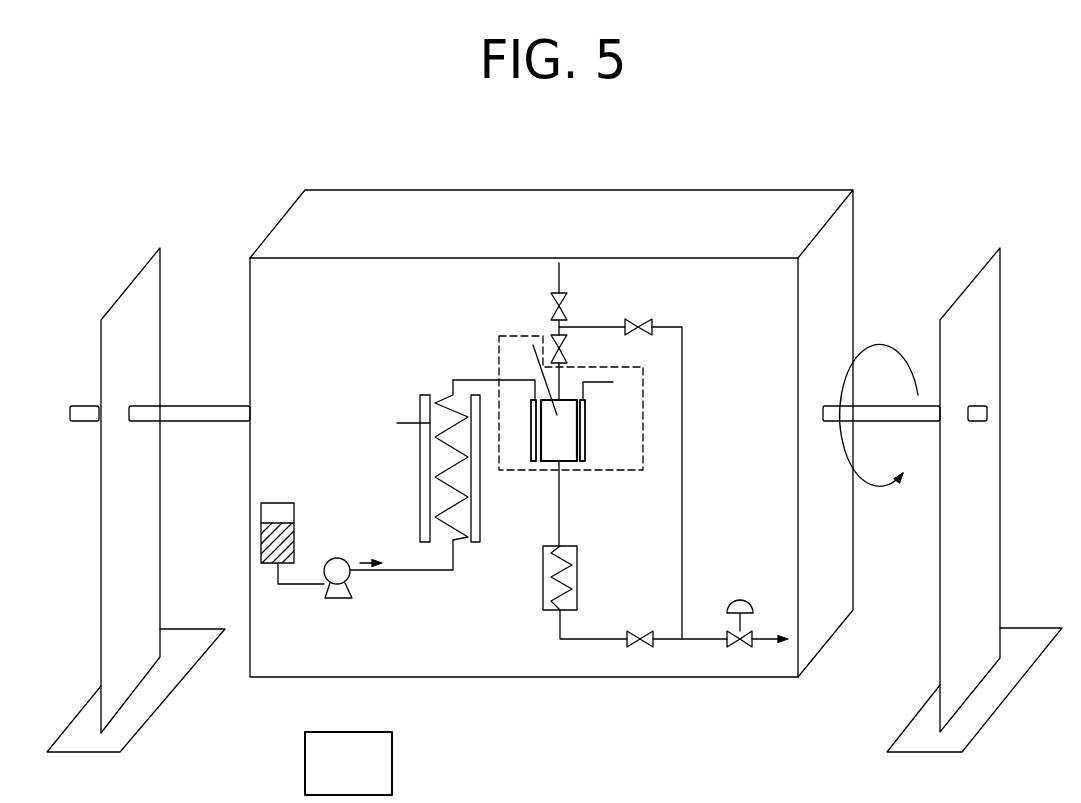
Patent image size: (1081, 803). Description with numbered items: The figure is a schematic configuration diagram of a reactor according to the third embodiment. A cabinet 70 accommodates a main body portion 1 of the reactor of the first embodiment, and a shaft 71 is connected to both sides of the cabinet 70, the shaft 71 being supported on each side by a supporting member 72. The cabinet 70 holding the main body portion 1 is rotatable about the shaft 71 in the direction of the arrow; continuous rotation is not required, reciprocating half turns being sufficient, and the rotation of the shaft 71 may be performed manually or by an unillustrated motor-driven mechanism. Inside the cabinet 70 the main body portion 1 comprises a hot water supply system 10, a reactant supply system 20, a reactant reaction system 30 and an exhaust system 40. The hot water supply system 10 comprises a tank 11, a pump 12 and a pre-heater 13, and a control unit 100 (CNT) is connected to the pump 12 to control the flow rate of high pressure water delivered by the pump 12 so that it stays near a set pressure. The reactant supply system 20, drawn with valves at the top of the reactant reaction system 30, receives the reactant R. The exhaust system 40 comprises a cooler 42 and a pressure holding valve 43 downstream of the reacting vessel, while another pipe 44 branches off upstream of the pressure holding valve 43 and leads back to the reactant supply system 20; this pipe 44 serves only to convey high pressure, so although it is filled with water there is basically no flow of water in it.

The main body portion 1 is at (318, 314).
The hot water supply system 10 is at (376, 582).
The tank 11 is at (272, 503).
The pump 12 is at (334, 558).
The pre-heater 13 is at (405, 459).
The reactant supply system 20 is at (600, 297).
The reactant reaction system 30 is at (621, 473).
The exhaust system 40 is at (537, 637).
The cooler 42 is at (577, 578).
The pressure holding valve 43 is at (740, 598).
The pipe 44 is at (683, 481).
The cabinet 70 is at (782, 207).
The shaft 71 is at (918, 397).
The supporting member 72 is at (987, 491).
The control unit 100 is at (392, 763).
The reactant gas R is at (556, 265).